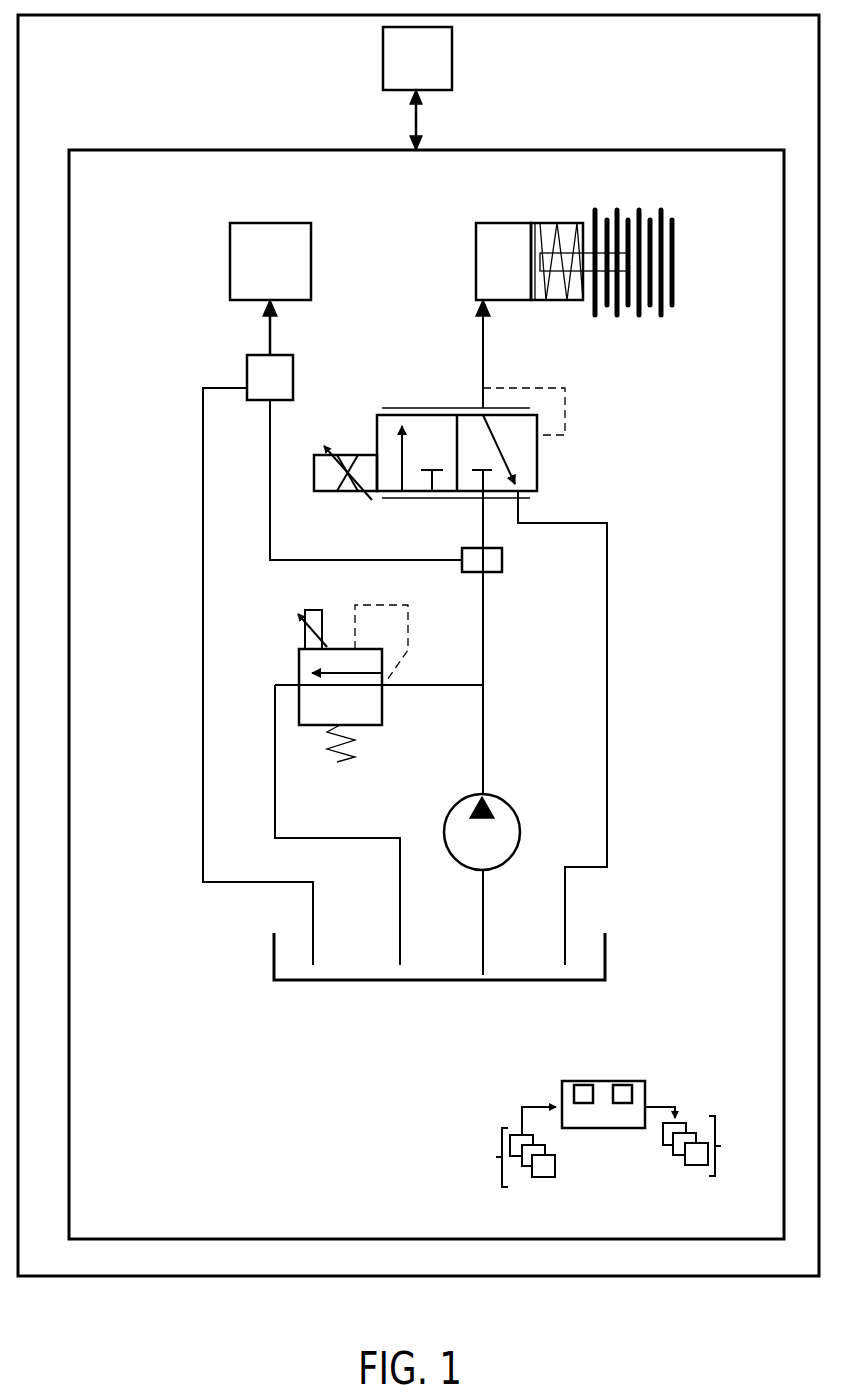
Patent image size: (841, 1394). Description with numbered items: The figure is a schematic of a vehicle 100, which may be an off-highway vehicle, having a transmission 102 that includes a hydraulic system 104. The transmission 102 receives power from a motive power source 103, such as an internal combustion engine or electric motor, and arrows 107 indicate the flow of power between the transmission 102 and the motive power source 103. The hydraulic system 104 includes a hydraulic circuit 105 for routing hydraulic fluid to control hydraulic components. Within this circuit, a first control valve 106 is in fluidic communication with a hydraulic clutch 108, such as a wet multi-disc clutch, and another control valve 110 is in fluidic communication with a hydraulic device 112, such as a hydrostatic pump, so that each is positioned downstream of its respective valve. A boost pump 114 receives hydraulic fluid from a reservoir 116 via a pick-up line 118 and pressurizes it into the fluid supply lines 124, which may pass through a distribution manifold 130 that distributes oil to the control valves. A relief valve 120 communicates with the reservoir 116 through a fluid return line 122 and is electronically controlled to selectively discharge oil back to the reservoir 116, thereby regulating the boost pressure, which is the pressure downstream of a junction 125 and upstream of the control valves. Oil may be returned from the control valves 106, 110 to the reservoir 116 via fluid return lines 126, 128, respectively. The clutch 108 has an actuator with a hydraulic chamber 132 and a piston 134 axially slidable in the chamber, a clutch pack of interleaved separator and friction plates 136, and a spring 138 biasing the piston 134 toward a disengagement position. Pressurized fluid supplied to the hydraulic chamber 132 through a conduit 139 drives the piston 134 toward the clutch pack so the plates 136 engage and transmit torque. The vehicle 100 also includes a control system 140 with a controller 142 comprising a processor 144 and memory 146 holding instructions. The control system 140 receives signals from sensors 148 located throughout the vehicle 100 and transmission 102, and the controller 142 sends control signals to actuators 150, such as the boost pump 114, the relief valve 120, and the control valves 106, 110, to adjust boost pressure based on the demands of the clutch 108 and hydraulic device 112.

The vehicle 100 is at (57, 46).
The transmission 102 is at (108, 181).
The motive power source 103 is at (382, 58).
The hydraulic system 104 is at (213, 1016).
The hydraulic circuit 105 is at (682, 503).
The first control valve 106 is at (541, 478).
The arrows 107 is at (413, 122).
The hydraulic clutch 108 is at (574, 273).
The control valve 110 is at (295, 379).
The hydraulic device 112 is at (312, 283).
The boost pump 114 is at (500, 801).
The reservoir 116 is at (608, 957).
The pick-up line 118 is at (485, 925).
The relief valve 120 is at (299, 660).
The fluid return line 122 is at (276, 806).
The fluid supply lines 124 is at (485, 630).
The junction 125 is at (492, 699).
The fluid return line 126 is at (608, 775).
The fluid return line 128 is at (203, 777).
The distribution manifold 130 is at (504, 553).
The hydraulic chamber 132 is at (517, 275).
The piston 134 is at (535, 297).
The separator and friction plates 136 is at (617, 316).
The spring 138 is at (572, 285).
The conduit 139 is at (483, 348).
The control system 140 is at (584, 1114).
The controller 142 is at (604, 1081).
The processor 144 is at (562, 1081).
The memory 146 is at (645, 1081).
The sensors 148 is at (508, 1157).
The actuators 150 is at (709, 1146).